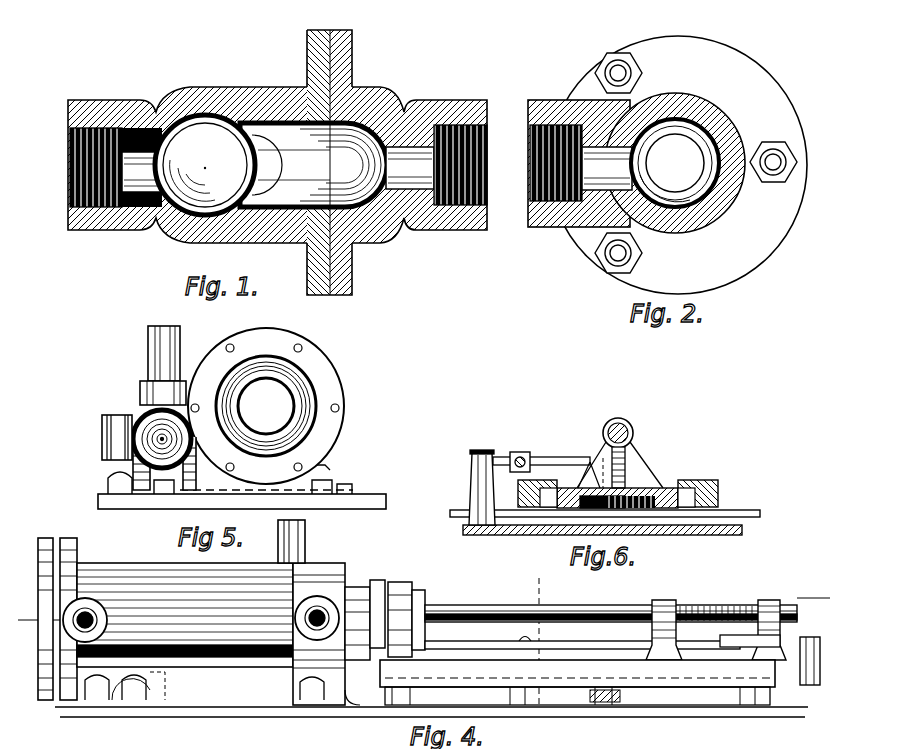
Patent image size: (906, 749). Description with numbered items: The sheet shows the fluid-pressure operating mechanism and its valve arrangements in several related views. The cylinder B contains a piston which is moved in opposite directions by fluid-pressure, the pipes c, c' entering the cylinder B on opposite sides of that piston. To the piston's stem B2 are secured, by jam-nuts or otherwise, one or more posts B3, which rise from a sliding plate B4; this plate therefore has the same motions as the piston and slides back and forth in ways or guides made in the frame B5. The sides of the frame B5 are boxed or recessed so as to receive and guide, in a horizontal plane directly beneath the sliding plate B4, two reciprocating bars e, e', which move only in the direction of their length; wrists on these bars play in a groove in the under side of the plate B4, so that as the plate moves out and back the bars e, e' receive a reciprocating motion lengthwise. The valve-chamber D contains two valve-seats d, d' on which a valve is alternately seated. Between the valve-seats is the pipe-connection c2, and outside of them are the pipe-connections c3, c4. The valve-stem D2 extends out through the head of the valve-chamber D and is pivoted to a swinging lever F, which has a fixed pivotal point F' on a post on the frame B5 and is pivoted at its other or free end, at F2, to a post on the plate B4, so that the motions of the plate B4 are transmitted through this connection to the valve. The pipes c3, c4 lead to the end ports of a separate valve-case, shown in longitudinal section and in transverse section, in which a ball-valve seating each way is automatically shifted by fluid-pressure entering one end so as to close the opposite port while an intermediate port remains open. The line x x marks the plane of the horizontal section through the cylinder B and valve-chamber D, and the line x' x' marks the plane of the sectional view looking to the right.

In FIG. 1, the pipe-connection c3 is at (86, 167).
In FIG. 1, the pipe c' is at (143, 172).
In FIG. 2, the pipe c' is at (551, 163).
In FIG. 5, the pipe c' is at (163, 365).
In FIG. 1, the valve-seat d' is at (205, 165).
In FIG. 1, the valve-seat d is at (313, 165).
In FIG. 2, the valve-seat d is at (675, 163).
In FIG. 1, the outlet passage c'' is at (410, 168).
In FIG. 2, the outlet passage c'' is at (607, 168).
In FIG. 1, the pipe-connection c4 is at (470, 165).
In FIG. 5, the pipe-connection c4 is at (117, 437).
In FIG. 4, the pipe c is at (201, 619).
In FIG. 4, the pipe-connection c2 is at (301, 541).
In FIG. 5, the cylinder B is at (266, 406).
In FIG. 4, the cylinder B is at (185, 615).
In FIG. 6, the piston stem B2 is at (633, 433).
In FIG. 4, the piston stem B2 is at (485, 603).
In FIG. 6, the post B3 is at (626, 467).
In FIG. 4, the post B3 is at (716, 618).
In FIG. 6, the sliding plate B4 is at (618, 490).
In FIG. 6, the frame B5 is at (621, 495).
In FIG. 4, the frame B5 is at (577, 682).
In FIG. 5, the valve-chamber D is at (164, 450).
In FIG. 6, the valve-stem D2 is at (520, 454).
In FIG. 4, the valve-stem D2 is at (582, 636).
In FIG. 6, the swinging lever F is at (541, 454).
In FIG. 4, the swinging lever F is at (756, 638).
In FIG. 6, the fixed pivotal point F' is at (479, 481).
In FIG. 6, the pivot F2 is at (590, 462).
In FIG. 4, the pivot F2 is at (811, 653).
In FIG. 6, the reciprocating bar e is at (611, 513).
In FIG. 6, the reciprocating bar e' is at (590, 522).
In FIG. 4, the section line x is at (423, 609).
In FIG. 4, the section line x' is at (538, 637).